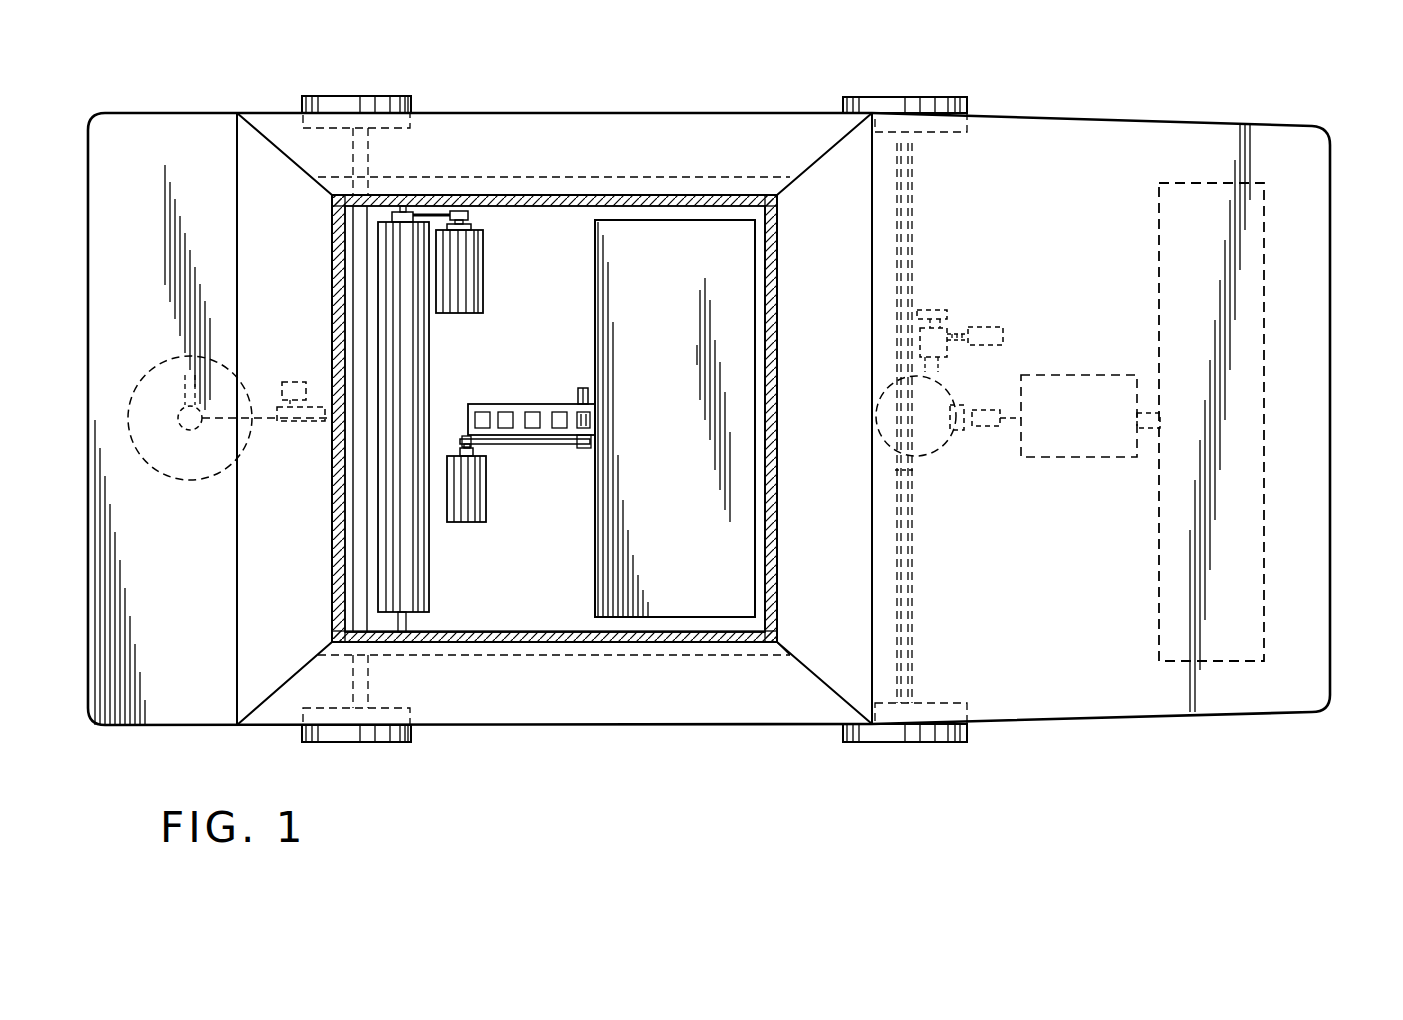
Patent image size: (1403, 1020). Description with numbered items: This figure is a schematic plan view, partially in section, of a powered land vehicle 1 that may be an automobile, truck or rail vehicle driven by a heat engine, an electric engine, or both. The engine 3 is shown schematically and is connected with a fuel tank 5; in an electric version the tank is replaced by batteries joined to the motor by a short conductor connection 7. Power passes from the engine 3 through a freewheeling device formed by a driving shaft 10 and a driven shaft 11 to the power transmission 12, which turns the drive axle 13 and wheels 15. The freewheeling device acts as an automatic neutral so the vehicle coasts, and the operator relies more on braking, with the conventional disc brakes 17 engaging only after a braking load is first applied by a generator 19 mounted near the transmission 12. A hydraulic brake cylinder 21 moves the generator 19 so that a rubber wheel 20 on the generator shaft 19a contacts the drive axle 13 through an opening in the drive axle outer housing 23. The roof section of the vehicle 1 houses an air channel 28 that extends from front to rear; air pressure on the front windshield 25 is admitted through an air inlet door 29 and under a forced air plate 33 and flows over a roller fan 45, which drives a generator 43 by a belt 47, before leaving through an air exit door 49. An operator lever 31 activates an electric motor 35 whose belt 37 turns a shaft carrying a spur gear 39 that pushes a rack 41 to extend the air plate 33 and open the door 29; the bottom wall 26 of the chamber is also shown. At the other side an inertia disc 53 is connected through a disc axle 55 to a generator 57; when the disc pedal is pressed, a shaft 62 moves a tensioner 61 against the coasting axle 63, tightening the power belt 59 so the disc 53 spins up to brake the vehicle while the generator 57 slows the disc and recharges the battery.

The land vehicle 1 is at (1205, 126).
The engine 3 is at (1084, 375).
The fuel tank 5 is at (1262, 592).
The conductor connection 7 is at (1149, 436).
The driving shaft 10 is at (998, 428).
The driven shaft 11 is at (970, 432).
The power transmission 12 is at (948, 440).
The drive axle 13 is at (902, 230).
The wheels 15 is at (903, 96).
The disc brakes 17 is at (928, 702).
The generator 19 is at (950, 350).
The generator shaft 19a is at (956, 322).
The rubber wheel 20 is at (927, 308).
The hydraulic brake cylinder 21 is at (997, 328).
The drive axle outer housing 23 is at (912, 532).
The front windshield 25 is at (818, 168).
The chamber bottom wall 26 is at (633, 645).
The air channel 28 is at (566, 652).
The air inlet door 29 is at (782, 195).
The lever 31 is at (775, 652).
The air plate 33 is at (702, 598).
The electric motor 35 is at (483, 510).
The belt 37 is at (505, 438).
The spur gear 39 is at (578, 397).
The rack 41 is at (546, 430).
The generator 43 is at (483, 265).
The roller fan 45 is at (415, 378).
The belt 47 is at (437, 212).
The air exit door 49 is at (320, 246).
The inertia disc 53 is at (130, 435).
The disc axle 55 is at (190, 405).
The generator 57 is at (184, 430).
The power belt 59 is at (220, 420).
The tensioner 61 is at (292, 422).
The shaft 62 is at (292, 380).
The coasting axle 63 is at (365, 162).